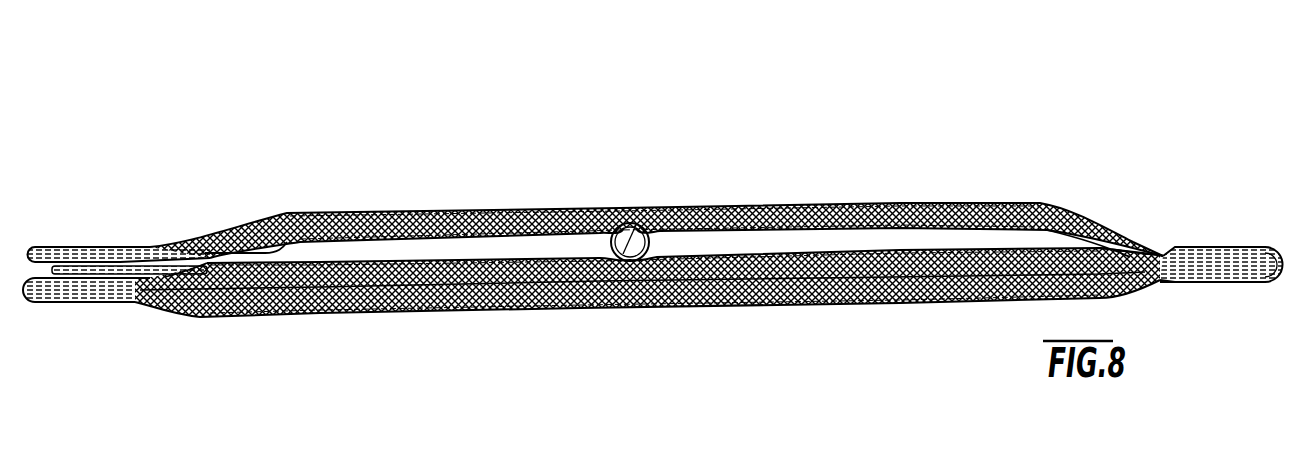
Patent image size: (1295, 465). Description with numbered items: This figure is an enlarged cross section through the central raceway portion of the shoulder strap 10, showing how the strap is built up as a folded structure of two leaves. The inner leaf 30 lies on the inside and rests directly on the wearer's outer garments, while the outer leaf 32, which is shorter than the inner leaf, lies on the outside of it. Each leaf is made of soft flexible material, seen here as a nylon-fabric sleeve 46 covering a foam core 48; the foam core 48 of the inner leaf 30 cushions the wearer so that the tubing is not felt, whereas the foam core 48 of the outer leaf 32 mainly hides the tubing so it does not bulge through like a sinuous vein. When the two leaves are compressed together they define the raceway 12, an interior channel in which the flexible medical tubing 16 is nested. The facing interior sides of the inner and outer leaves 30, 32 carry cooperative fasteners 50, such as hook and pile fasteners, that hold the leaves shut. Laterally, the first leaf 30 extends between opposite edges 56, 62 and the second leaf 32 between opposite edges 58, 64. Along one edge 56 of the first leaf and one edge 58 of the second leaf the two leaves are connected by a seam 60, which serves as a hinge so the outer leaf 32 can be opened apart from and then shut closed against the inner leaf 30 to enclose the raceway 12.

The shoulder strap 10 is at (335, 103).
The raceway 12 is at (687, 242).
The medical tubing 16 is at (645, 218).
The inner leaf 30 is at (848, 306).
The outer leaf 32 is at (920, 204).
The nylon-fabric sleeve 46 is at (475, 208).
The foam core 48 is at (538, 207).
The cooperative fasteners 50 is at (277, 237).
The edge of first leaf 56 is at (1158, 281).
The edge of second leaf 58 is at (1130, 232).
The seam 60 is at (1227, 246).
The opposite edge of first leaf 62 is at (107, 300).
The opposite edge of second leaf 64 is at (117, 262).